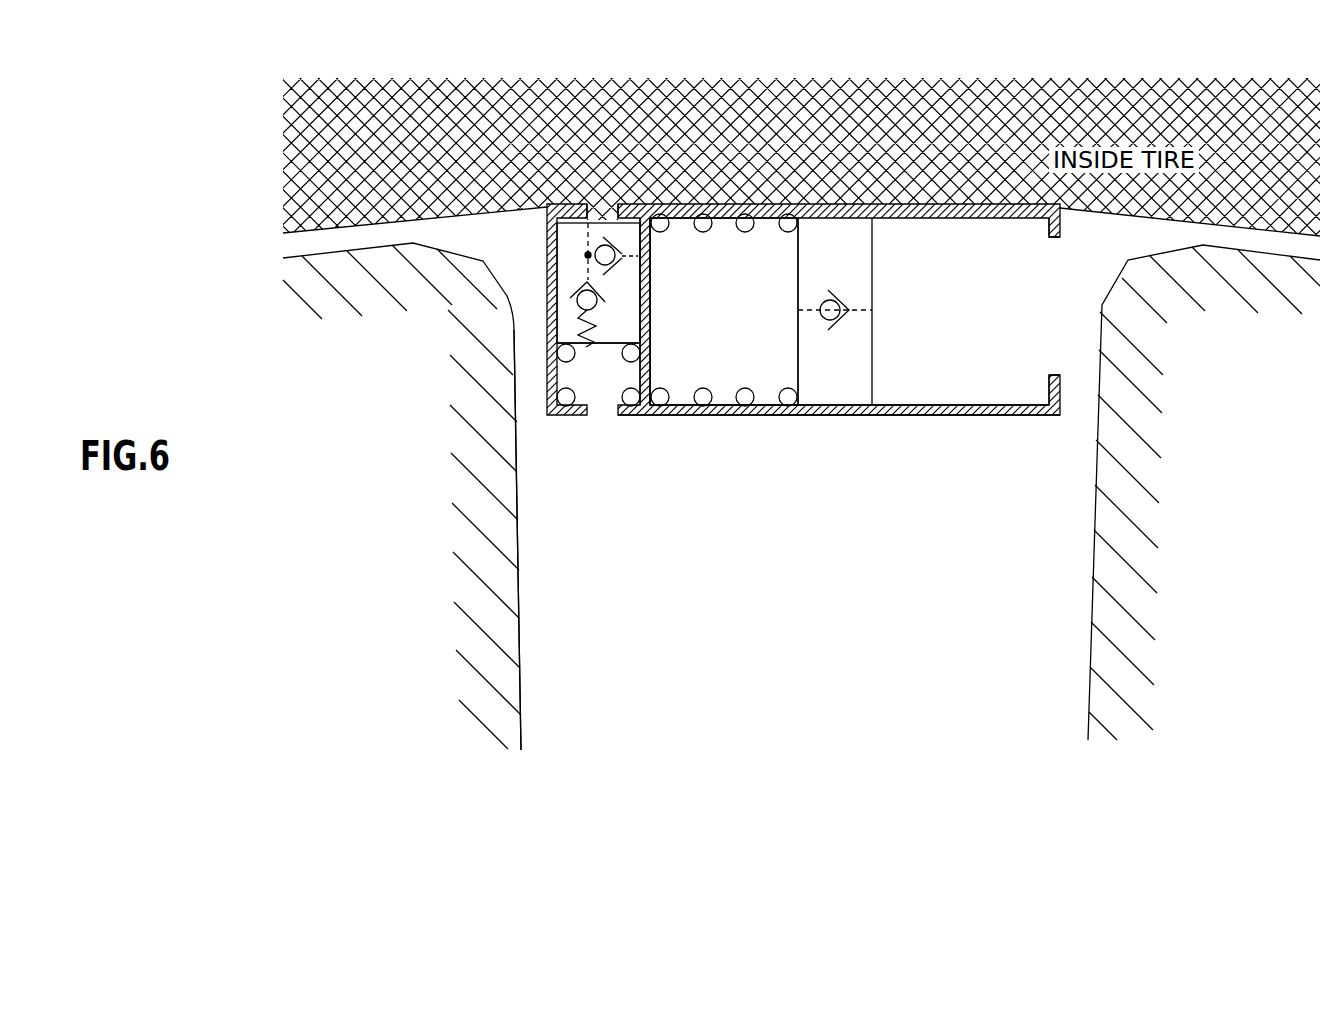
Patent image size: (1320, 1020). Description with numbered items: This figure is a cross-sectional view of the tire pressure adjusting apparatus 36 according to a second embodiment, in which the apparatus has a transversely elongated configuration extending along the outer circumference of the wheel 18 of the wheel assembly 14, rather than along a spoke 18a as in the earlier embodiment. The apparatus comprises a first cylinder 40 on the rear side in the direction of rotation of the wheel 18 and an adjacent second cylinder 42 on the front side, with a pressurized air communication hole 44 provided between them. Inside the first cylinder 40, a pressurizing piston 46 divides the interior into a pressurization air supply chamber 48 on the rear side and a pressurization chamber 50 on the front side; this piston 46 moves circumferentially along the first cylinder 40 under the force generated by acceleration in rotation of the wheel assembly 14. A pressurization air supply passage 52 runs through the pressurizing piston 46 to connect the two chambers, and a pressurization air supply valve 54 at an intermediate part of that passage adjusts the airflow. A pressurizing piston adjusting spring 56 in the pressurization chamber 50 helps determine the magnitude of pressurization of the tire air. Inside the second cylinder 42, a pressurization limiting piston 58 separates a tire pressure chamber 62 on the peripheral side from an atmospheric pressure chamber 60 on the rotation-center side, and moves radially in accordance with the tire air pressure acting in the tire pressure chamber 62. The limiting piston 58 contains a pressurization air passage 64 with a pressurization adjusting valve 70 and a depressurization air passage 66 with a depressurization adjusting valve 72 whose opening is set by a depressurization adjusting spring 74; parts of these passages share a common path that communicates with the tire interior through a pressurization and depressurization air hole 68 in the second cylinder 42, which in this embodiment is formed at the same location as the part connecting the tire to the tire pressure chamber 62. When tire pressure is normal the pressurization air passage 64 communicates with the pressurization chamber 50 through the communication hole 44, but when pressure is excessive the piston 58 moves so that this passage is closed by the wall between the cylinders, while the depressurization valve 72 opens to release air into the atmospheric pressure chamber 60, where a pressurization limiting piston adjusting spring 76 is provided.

The wheel assembly 14 is at (483, 783).
The wheel 18 is at (333, 244).
The spoke 18a is at (521, 700).
The tire pressure adjusting apparatus 36 is at (823, 530).
The first cylinder 40 is at (970, 418).
The second cylinder 42 is at (572, 418).
The pressurized air communication hole 44 is at (650, 266).
The pressurizing piston 46 is at (838, 404).
The pressurization air supply chamber 48 is at (1013, 372).
The pressurization chamber 50 is at (722, 372).
The pressurization air supply passage 52 is at (852, 308).
The pressurization air supply valve 54 is at (831, 300).
The pressurizing piston adjusting spring 56 is at (790, 214).
The pressurization limiting piston 58 is at (632, 312).
The atmospheric pressure chamber 60 is at (600, 403).
The tire pressure chamber 62 is at (579, 206).
The pressurization air passage 64 is at (629, 262).
The depressurization air passage 66 is at (590, 338).
The pressurization and depressurization air hole 68 is at (596, 212).
The pressurization adjusting valve 70 is at (623, 254).
The depressurization adjusting valve 72 is at (570, 300).
The depressurization adjusting spring 74 is at (575, 342).
The pressurization limiting piston adjusting spring 76 is at (565, 398).